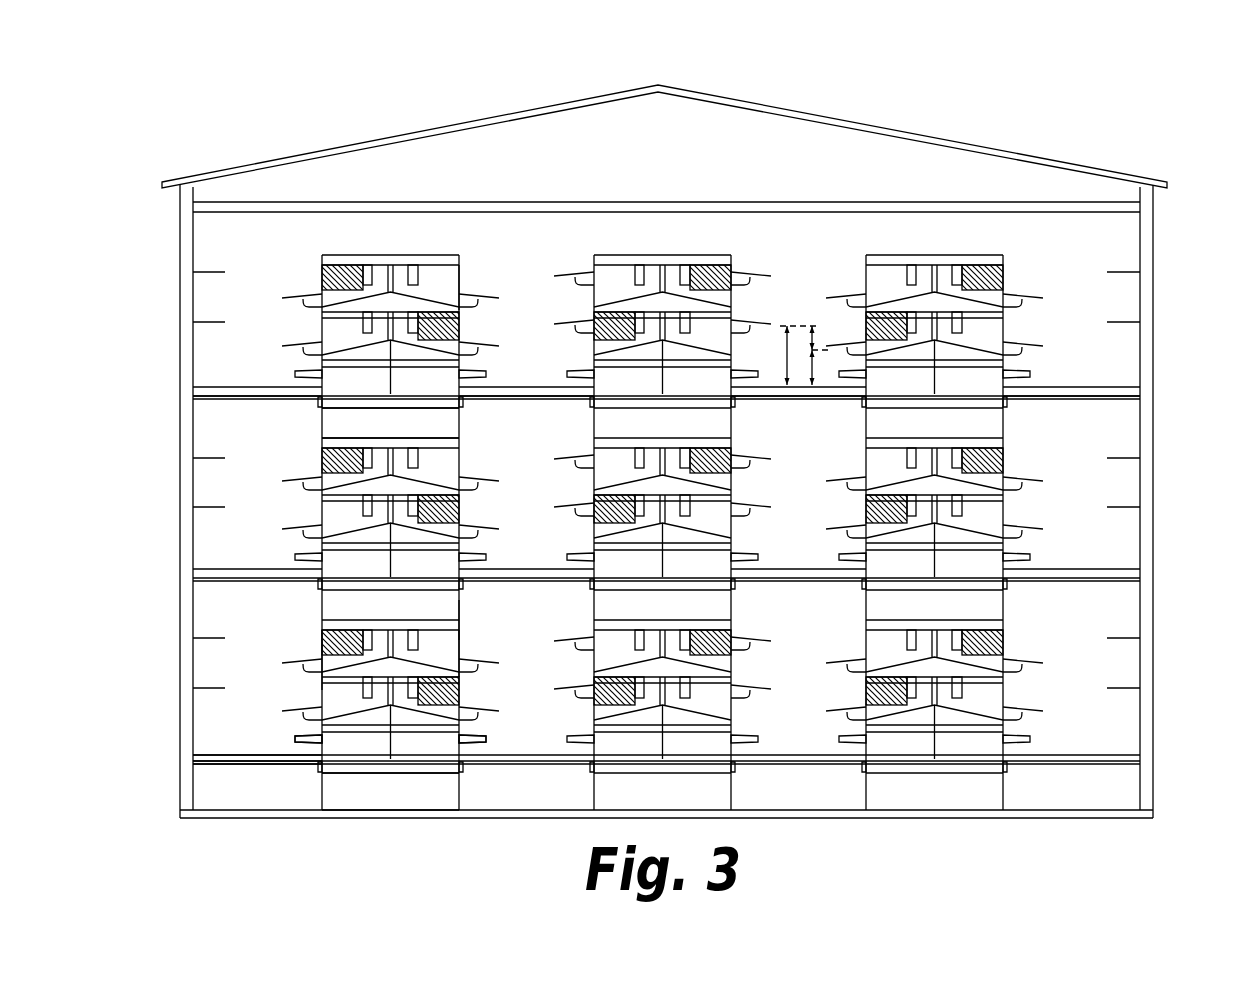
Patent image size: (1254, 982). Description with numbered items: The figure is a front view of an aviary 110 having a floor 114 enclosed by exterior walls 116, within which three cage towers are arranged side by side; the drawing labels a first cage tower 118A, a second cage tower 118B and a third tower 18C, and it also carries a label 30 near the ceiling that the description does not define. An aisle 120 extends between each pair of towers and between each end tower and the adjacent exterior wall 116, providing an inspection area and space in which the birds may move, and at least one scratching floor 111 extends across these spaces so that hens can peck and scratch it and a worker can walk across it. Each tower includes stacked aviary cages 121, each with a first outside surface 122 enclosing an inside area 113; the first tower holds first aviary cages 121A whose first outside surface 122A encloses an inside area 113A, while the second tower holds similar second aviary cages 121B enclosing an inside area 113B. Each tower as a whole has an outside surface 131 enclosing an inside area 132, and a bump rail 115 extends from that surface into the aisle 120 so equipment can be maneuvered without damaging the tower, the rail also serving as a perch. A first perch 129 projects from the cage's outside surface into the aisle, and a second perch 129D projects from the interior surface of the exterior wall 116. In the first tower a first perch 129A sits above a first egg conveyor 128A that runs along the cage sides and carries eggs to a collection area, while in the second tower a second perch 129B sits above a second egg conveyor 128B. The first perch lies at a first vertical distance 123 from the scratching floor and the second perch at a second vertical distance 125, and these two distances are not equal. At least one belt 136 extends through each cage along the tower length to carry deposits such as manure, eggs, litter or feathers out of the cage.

The aviary 110 is at (676, 463).
The scratching floor 111 is at (255, 763).
The inside area 113 is at (414, 674).
The inside area 113A is at (405, 309).
The inside area 113B is at (660, 309).
The floor 114 is at (512, 818).
The bump rail 115 is at (483, 738).
The exterior wall 116 is at (180, 442).
The first cage tower 118A is at (388, 492).
The second cage tower 118B is at (682, 492).
The cage stack 18C is at (961, 240).
The aisle 120 is at (278, 472).
The aviary cage 121 is at (390, 674).
The first aviary cage 121A is at (378, 309).
The second aviary cage 121B is at (682, 309).
The first outside surface 122 is at (833, 350).
The first outside surface 122A is at (460, 280).
The first vertical distance 123 is at (813, 370).
The second vertical distance 125 is at (787, 386).
The first egg conveyor 128A is at (470, 356).
The second egg conveyor 128B is at (583, 330).
The first perch 129 is at (485, 715).
The first perch 129A is at (405, 338).
The second perch 129B is at (660, 320).
The second perch 129D is at (212, 275).
The outside surface 131 is at (457, 615).
The inside area 132 is at (448, 646).
The belt 136 is at (350, 623).
The ceiling beam 30 is at (1138, 222).